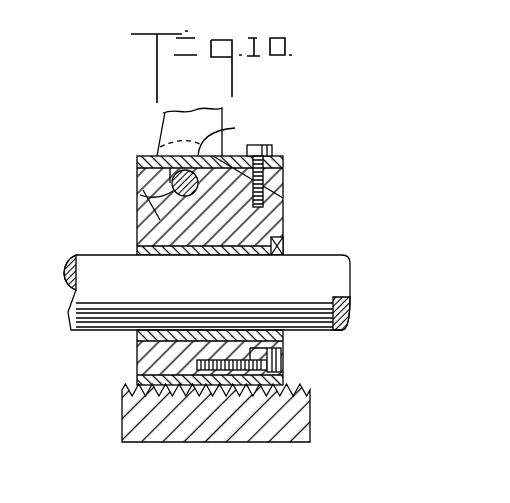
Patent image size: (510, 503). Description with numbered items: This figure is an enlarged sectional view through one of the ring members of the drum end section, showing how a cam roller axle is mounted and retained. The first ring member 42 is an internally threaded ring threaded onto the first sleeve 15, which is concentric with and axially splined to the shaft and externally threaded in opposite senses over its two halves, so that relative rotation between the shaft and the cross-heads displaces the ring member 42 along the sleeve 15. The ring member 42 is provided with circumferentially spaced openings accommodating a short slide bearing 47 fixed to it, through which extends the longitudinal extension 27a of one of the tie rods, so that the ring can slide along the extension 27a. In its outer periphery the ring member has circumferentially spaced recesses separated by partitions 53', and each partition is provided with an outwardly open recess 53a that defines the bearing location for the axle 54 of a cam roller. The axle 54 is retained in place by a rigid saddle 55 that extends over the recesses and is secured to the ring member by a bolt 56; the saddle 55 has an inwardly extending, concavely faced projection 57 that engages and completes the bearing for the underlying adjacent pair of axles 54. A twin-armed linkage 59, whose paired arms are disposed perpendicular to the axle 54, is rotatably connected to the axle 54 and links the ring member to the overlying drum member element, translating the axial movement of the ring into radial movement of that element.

The first sleeve 15 is at (142, 417).
The longitudinal extension of tie rod 27a is at (335, 285).
The first ring member 42 is at (148, 353).
The short slide bearing 47 is at (280, 243).
The partition 53' is at (181, 205).
The outwardly open recess 53a is at (180, 197).
The axle 54 is at (170, 184).
The saddle 55 is at (143, 157).
The bolt 56 is at (267, 145).
The concavely faced projection 57 is at (231, 132).
The twin-armed linkage 59 is at (170, 117).